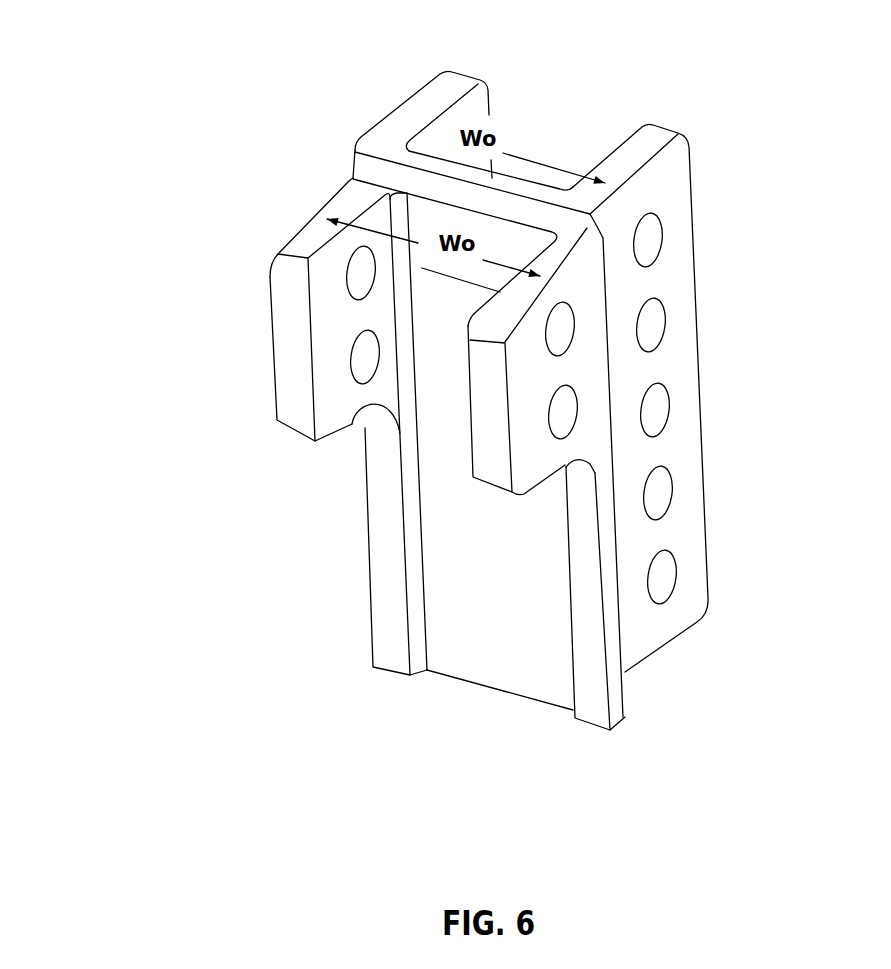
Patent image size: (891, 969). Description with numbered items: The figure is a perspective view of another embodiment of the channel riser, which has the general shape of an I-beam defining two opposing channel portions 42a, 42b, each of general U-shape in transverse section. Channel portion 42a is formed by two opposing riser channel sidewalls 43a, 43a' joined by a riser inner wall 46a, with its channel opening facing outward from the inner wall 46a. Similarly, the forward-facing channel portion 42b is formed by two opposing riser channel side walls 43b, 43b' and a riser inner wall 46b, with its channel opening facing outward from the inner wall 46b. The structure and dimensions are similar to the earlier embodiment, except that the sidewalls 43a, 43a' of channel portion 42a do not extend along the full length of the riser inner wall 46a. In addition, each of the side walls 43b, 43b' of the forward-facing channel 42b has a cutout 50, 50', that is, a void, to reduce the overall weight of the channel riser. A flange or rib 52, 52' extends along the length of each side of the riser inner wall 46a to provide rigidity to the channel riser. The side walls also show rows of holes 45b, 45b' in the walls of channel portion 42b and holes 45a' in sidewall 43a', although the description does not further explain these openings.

The channel portion 42a is at (576, 136).
The channel portion 42b is at (347, 497).
The riser channel sidewall 43a is at (369, 124).
The riser channel sidewall 43a' is at (719, 420).
The riser channel side wall 43b is at (271, 426).
The riser channel side wall 43b' is at (679, 361).
The mounting holes in second flange of first bracket 45a' is at (731, 408).
The mounting holes in first flange of second bracket 45b is at (264, 348).
The mounting holes in second flange of second bracket 45b' is at (703, 370).
The riser inner wall 46a is at (522, 148).
The riser inner wall 46b is at (482, 625).
The cutout 50 is at (301, 447).
The cutout 50' is at (555, 507).
The flange or rib 52 is at (357, 557).
The flange or rib 52' is at (632, 598).